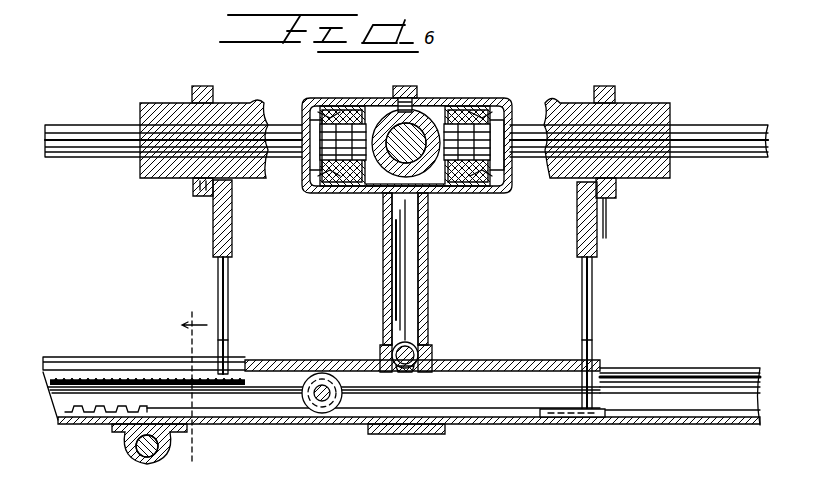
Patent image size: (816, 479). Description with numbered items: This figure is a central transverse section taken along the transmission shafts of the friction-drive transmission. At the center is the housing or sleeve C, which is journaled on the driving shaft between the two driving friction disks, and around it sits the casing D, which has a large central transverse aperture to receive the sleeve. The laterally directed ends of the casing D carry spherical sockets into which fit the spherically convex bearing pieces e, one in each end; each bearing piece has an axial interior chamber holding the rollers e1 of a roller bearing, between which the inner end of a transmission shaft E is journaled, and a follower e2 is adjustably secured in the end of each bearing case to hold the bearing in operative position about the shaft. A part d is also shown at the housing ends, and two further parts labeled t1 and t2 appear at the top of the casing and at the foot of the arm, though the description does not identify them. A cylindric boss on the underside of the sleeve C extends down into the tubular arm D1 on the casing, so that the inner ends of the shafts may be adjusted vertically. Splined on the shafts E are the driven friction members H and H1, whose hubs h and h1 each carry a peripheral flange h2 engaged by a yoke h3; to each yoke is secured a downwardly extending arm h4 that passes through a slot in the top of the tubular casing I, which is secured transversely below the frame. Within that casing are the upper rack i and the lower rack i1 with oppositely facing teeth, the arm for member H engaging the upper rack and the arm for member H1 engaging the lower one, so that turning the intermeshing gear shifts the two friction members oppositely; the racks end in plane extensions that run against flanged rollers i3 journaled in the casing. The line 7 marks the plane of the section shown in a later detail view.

The transmission shaft E is at (100, 126).
The hub h is at (160, 178).
The hub h1 is at (650, 178).
The peripheral flange h2 is at (606, 212).
The yoke h3 is at (640, 97).
The downwardly extending arm h4 is at (228, 338).
The driven friction member H is at (258, 215).
The driven friction member H1 is at (550, 296).
The casing D is at (468, 108).
The tubular arm D1 is at (385, 275).
The housing or sleeve C is at (408, 137).
The set screw t1 is at (384, 100).
The lower ball t2 is at (418, 356).
The bearing piece e is at (352, 118).
The rollers e1 is at (480, 186).
The follower e2 is at (318, 124).
The housing end walls d is at (348, 190).
The tubular housing or casing I is at (296, 358).
The upper rack i is at (142, 378).
The lower rack i1 is at (528, 425).
The flanged roller i3 is at (140, 458).
The section line 7 is at (194, 385).